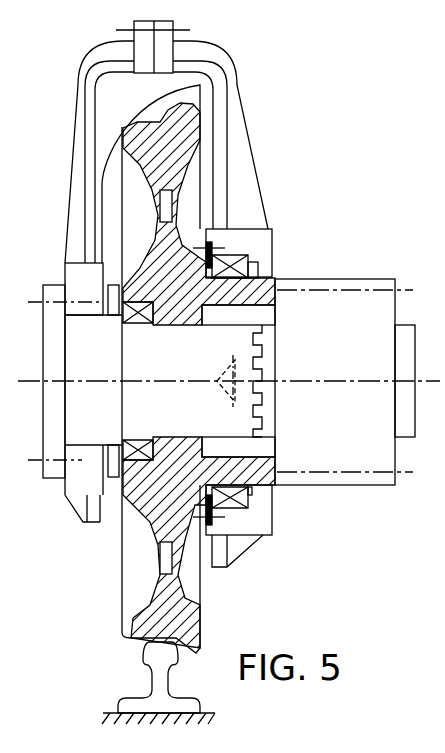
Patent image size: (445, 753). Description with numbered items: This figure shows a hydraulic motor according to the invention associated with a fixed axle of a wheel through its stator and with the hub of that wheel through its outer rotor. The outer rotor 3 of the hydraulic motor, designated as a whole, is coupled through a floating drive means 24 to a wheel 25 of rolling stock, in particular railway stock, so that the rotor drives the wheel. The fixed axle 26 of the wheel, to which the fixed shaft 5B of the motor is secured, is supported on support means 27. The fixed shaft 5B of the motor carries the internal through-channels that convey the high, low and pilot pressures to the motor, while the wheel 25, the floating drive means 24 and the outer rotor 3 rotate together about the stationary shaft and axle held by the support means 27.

The support means 27 is at (222, 153).
The floating drive means 24 is at (274, 281).
The fixed shaft 5B is at (403, 335).
The outer rotor 3 is at (312, 458).
The fixed axle 26 is at (95, 382).
The wheel 25 is at (140, 505).